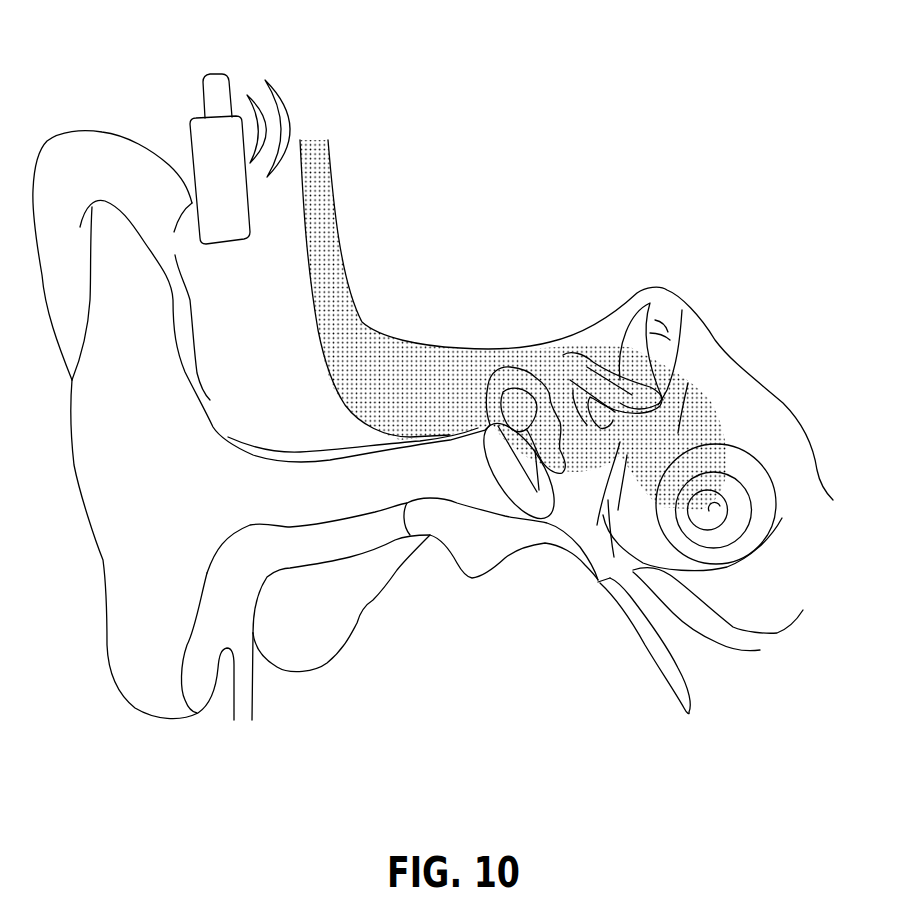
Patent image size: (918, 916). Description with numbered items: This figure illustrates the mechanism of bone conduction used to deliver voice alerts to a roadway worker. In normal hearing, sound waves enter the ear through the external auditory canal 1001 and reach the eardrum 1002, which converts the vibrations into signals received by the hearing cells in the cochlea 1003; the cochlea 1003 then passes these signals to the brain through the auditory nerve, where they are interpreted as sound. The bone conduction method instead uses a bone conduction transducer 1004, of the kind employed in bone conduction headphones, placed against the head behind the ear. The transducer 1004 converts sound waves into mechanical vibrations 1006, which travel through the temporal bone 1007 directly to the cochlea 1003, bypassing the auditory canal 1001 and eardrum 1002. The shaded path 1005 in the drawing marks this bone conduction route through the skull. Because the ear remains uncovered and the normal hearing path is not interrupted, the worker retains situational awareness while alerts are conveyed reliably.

The external auditory canal 1001 is at (240, 497).
The eardrum 1002 is at (497, 487).
The cochlea 1003 is at (715, 510).
The bone conduction transducer 1004 is at (210, 73).
The skull bone (vibration conduction path) 1005 is at (403, 335).
The mechanical vibrations 1006 is at (290, 110).
The temporal bone 1007 is at (500, 362).